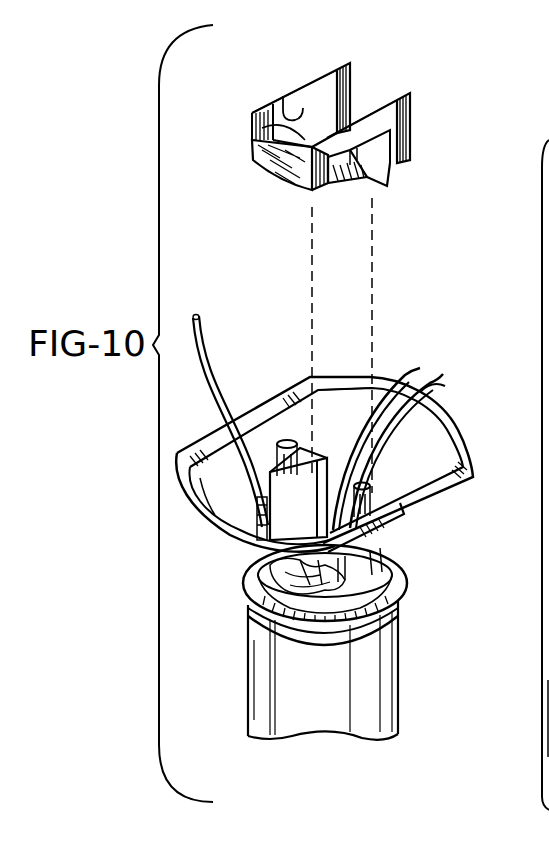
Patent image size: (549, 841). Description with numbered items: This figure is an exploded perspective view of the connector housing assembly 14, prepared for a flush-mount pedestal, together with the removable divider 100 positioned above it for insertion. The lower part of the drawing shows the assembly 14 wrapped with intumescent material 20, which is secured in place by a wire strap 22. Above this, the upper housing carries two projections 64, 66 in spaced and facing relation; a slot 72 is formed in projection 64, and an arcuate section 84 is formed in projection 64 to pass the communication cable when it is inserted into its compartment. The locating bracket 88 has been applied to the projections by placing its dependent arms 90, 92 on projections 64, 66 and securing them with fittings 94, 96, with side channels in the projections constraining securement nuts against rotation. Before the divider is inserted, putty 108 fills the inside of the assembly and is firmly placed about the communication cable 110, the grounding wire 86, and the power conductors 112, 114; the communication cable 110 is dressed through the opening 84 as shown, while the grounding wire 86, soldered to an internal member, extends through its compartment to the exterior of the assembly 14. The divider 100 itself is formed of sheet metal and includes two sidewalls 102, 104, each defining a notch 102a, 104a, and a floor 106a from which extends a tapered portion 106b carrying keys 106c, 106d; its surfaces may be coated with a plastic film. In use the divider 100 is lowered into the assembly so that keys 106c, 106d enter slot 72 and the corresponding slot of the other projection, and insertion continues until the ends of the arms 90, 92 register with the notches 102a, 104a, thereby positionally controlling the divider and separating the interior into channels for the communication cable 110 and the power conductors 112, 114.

The connector housing assembly 14 is at (341, 640).
The intumescent material 20 is at (343, 723).
The wire strap 22 is at (325, 650).
The projection 64 is at (257, 510).
The projection 66 is at (400, 547).
The slot 72 is at (310, 493).
The arcuate section 84 is at (237, 537).
The grounding wire 86 is at (433, 383).
The locating bracket 88 is at (450, 417).
The dependent arm 90 is at (263, 460).
The dependent arm 92 is at (410, 530).
The fitting 94 is at (345, 403).
The fitting 96 is at (380, 490).
The divider 100 is at (330, 130).
The sidewall 102 is at (276, 77).
The notch 102a is at (297, 117).
The sidewall 104 is at (408, 145).
The notch 104a is at (363, 140).
The floor 106a is at (283, 170).
The tapered portion 106b is at (340, 182).
The key 106c is at (307, 137).
The key 106d is at (363, 183).
The putty 108 is at (263, 577).
The communication cable 110 is at (203, 347).
The power conductor 112 is at (403, 360).
The power conductor 114 is at (420, 370).